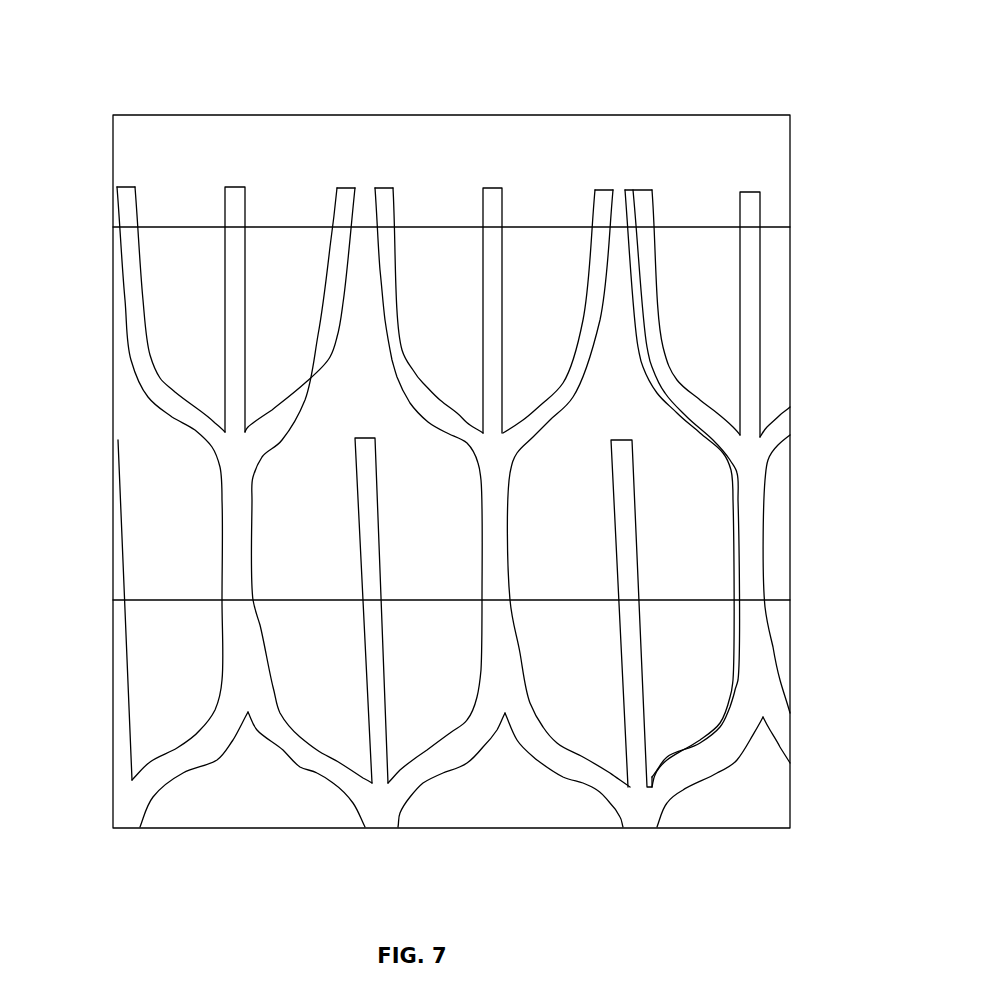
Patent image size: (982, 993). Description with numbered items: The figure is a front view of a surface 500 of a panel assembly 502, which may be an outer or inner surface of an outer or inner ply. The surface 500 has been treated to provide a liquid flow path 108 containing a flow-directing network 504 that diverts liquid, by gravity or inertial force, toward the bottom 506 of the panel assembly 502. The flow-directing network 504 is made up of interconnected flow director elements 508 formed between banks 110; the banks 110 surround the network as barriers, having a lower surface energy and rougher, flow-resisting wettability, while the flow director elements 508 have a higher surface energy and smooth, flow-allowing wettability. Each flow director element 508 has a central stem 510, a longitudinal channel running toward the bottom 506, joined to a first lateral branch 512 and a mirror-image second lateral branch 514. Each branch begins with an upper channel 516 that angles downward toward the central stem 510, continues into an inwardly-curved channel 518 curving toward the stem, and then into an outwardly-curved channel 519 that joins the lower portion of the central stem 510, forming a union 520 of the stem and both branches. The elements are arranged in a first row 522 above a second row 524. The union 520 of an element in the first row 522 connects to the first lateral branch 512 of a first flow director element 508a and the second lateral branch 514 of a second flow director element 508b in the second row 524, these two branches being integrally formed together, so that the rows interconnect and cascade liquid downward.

The liquid flow path 108 is at (124, 319).
The banks 110 is at (515, 227).
The surface 500 is at (113, 163).
The panel assembly 502 is at (820, 148).
The flow-directing network 504 is at (88, 566).
The bottom 506 is at (468, 829).
The flow director elements 508 is at (515, 183).
The first flow director element 508a is at (657, 550).
The second flow director element 508b is at (335, 552).
The central stem 510 is at (502, 288).
The first lateral branch 512 is at (393, 213).
The second lateral branch 514 is at (605, 190).
The upper channel 516 is at (400, 280).
The inwardly-curved channel 518 is at (447, 428).
The outwardly-curved channel 519 is at (483, 433).
The union 520 is at (493, 452).
The first row 522 is at (813, 299).
The second row 524 is at (480, 567).